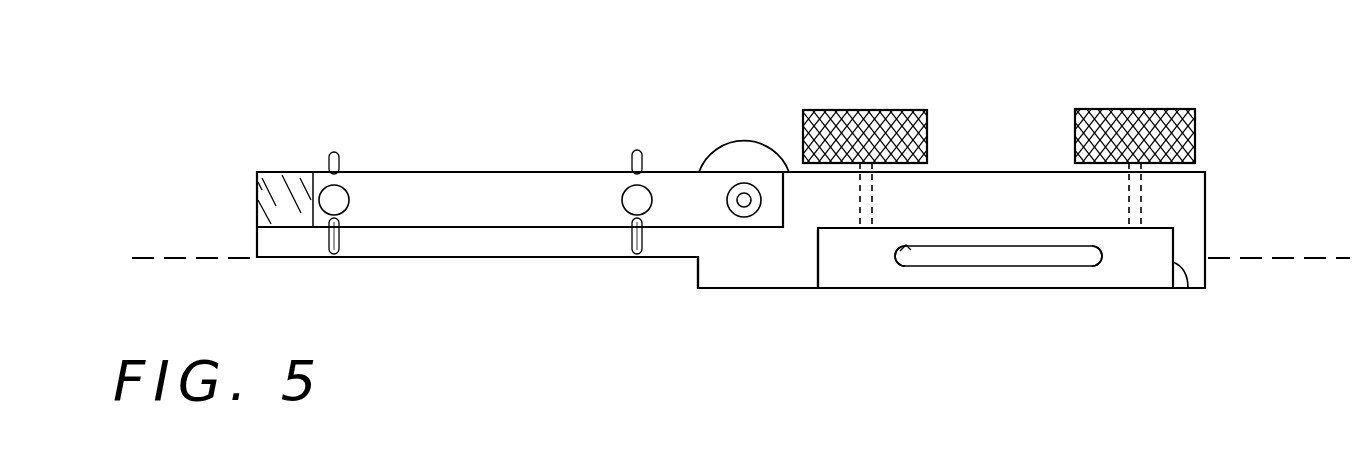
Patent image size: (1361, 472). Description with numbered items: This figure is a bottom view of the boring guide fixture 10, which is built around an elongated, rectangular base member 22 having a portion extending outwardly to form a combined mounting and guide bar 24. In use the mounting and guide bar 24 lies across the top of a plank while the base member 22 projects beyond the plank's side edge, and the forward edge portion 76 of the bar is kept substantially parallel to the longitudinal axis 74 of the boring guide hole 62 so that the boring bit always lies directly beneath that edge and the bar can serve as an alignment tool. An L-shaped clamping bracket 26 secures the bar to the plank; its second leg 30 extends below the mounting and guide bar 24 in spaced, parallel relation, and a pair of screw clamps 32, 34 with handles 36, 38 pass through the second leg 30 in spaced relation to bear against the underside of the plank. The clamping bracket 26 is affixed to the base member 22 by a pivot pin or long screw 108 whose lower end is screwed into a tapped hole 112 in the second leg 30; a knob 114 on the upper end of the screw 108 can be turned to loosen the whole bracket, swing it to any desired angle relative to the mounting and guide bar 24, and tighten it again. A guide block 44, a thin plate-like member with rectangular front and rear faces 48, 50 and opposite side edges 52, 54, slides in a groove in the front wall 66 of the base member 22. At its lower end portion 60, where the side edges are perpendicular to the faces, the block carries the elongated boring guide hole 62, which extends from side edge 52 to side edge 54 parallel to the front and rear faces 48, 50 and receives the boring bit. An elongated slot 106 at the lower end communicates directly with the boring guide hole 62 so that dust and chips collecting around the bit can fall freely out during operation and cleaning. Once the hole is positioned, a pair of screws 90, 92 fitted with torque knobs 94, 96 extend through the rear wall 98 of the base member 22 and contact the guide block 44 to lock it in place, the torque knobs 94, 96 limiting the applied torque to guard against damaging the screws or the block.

The boring guide fixture 10 is at (887, 74).
The base member 22 is at (1195, 196).
The mounting and guide bar 24 is at (508, 254).
The clamping bracket 26 is at (402, 176).
The second leg 30 is at (484, 172).
The screw clamp 32 is at (623, 195).
The screw clamp 34 is at (322, 187).
The handle 36 is at (632, 253).
The handle 38 is at (337, 256).
The guide block 44 is at (857, 278).
The front face 48 is at (1130, 290).
The rear face 50 is at (983, 228).
The side edge 52 is at (1183, 290).
The side edge 54 is at (812, 258).
The lower end portion 60 is at (990, 290).
The boring guide hole 62 is at (938, 260).
The front wall 66 is at (728, 290).
The longitudinal axis 74 is at (212, 258).
The forward edge portion 76 is at (363, 172).
The screw 90 is at (1125, 215).
The screw 92 is at (881, 213).
The torque knob 94 is at (1178, 108).
The torque knob 96 is at (813, 108).
The rear wall 98 is at (945, 172).
The elongated slot 106 is at (1068, 258).
The pivot pin or long screw 108 is at (742, 196).
The tapped hole 112 is at (745, 217).
The knob 114 is at (700, 170).